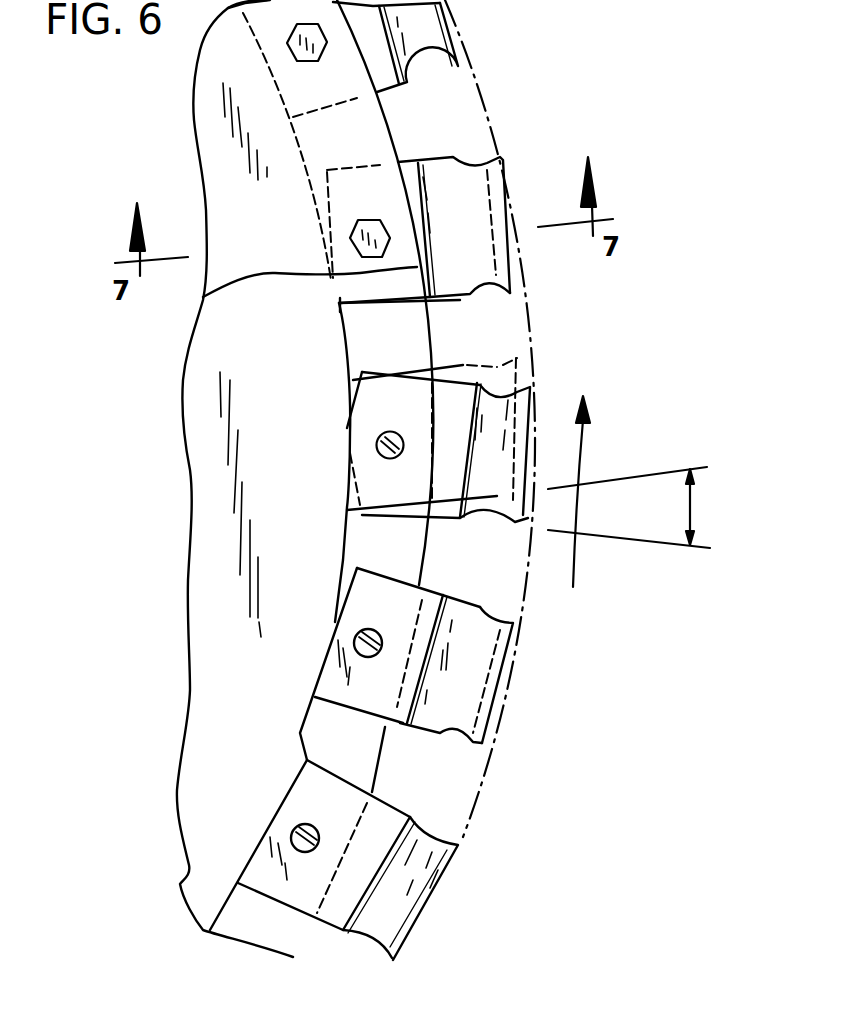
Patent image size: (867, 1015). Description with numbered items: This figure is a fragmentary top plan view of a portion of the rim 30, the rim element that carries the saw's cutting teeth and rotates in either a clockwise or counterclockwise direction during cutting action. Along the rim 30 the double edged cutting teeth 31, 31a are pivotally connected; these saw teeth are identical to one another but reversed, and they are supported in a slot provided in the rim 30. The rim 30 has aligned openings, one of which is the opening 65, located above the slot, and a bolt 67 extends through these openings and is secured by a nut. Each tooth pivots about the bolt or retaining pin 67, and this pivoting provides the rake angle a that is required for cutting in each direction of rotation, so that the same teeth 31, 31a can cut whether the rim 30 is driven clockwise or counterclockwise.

The rim 30 is at (382, 757).
The cutting tooth 31 is at (495, 700).
The cutting tooth 31a is at (442, 875).
The opening 65 is at (378, 438).
The bolt 67 is at (350, 239).
The rake angle a is at (693, 507).